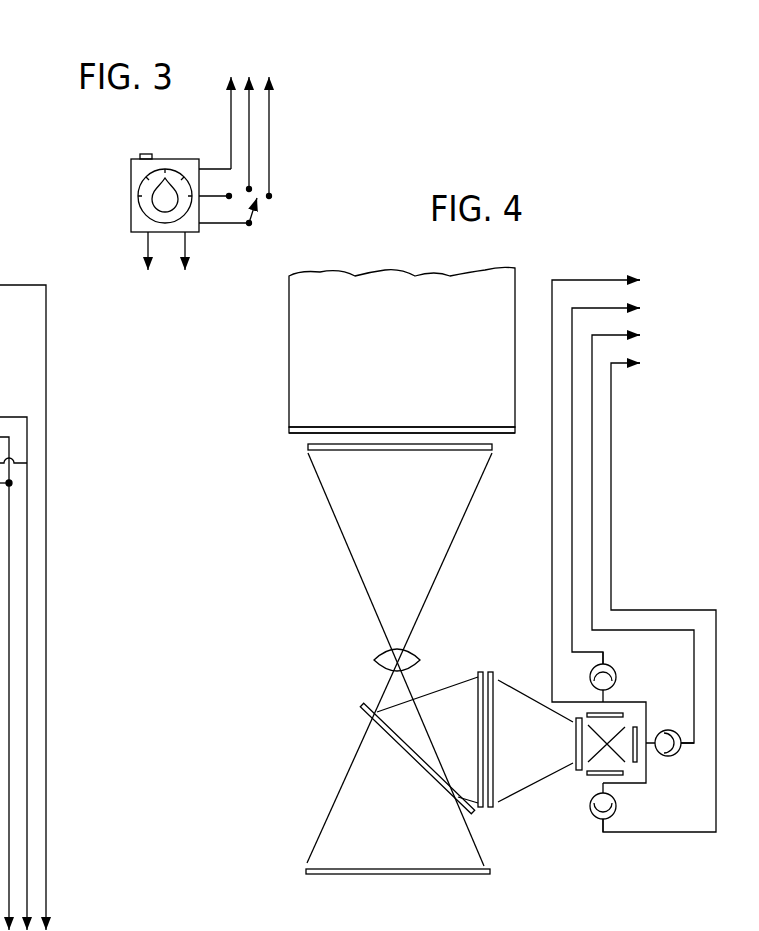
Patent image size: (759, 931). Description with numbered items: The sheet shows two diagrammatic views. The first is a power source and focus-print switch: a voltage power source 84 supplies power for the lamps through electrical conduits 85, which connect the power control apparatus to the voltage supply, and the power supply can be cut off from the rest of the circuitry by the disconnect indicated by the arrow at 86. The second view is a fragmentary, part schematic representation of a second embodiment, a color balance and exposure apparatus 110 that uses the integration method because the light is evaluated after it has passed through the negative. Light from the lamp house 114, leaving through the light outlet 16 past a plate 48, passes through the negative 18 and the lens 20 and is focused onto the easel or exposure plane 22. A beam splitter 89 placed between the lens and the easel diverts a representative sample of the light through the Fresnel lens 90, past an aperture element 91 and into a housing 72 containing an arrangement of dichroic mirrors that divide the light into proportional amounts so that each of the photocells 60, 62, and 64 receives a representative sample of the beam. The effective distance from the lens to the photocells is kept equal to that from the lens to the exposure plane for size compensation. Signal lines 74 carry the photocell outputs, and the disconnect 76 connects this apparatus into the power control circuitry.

In FIG. 3, the voltage power source 84 is at (127, 197).
In FIG. 3, the electrical conduits 85 is at (250, 120).
In FIG. 3, the disconnect 86 is at (273, 70).
In FIG. 4, the lamp house 114 is at (288, 352).
In FIG. 4, the plate 48 is at (320, 427).
In FIG. 4, the light outlet 16 is at (293, 441).
In FIG. 4, the negative 18 is at (367, 451).
In FIG. 4, the apparatus 110 is at (318, 586).
In FIG. 4, the lens 20 is at (383, 653).
In FIG. 4, the easel 22 is at (335, 869).
In FIG. 4, the beam splitter 89 is at (413, 763).
In FIG. 4, the Fresnel lens 90 is at (485, 814).
In FIG. 4, the aperture plate 91 is at (573, 780).
In FIG. 4, the detector housing 72 is at (618, 702).
In FIG. 4, the photocell 60 is at (612, 666).
In FIG. 4, the photocell 62 is at (668, 730).
In FIG. 4, the photocell 64 is at (617, 810).
In FIG. 4, the signal lines 74 is at (572, 560).
In FIG. 4, the disconnect 76 is at (645, 297).